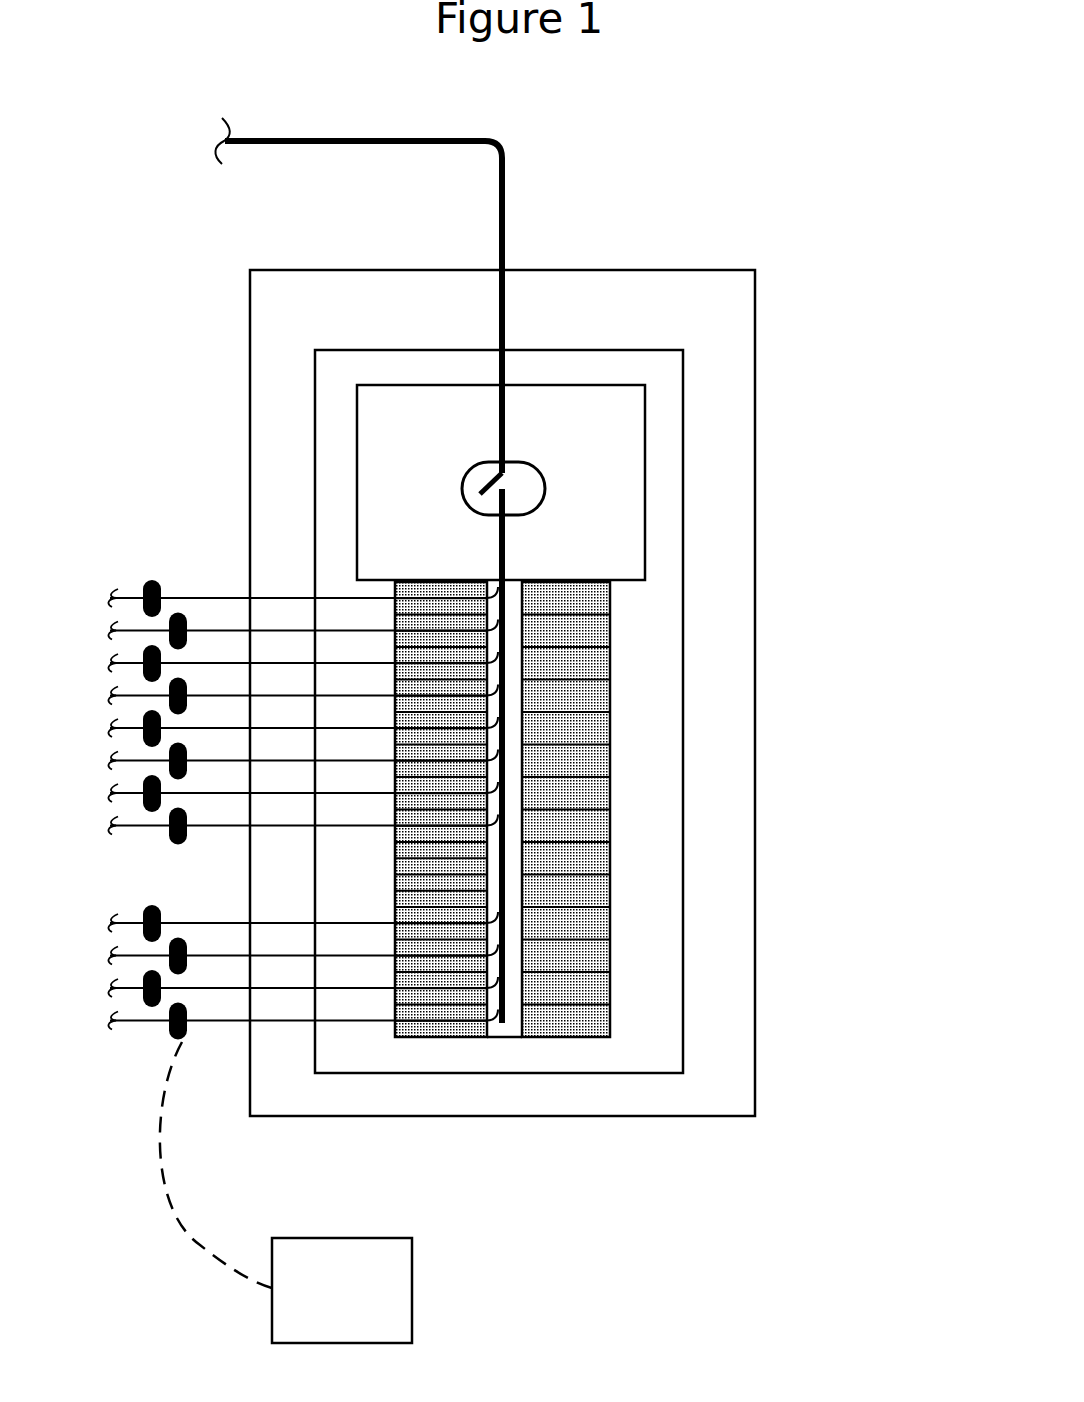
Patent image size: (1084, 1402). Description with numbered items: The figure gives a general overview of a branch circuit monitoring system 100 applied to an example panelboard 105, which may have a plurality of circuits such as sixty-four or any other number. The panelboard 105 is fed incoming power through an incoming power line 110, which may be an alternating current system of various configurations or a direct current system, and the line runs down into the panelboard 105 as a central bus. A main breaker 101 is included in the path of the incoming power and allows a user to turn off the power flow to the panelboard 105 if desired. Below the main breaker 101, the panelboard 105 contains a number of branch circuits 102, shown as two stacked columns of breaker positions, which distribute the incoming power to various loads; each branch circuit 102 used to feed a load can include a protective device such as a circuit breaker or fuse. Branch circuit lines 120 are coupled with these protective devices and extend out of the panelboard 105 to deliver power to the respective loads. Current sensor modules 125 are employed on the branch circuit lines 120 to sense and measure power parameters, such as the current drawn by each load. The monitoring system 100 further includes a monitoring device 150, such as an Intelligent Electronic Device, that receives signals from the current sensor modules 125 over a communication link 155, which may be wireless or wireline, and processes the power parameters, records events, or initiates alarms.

The branch circuit monitoring system 100 is at (681, 127).
The main breaker 101 is at (617, 472).
The branch circuits 102 is at (587, 597).
The panelboard 105 is at (722, 270).
The incoming power line 110 is at (328, 139).
The branch circuit lines 120 is at (215, 596).
The current sensor modules 125 is at (148, 584).
The monitoring device 150 is at (345, 1235).
The communication link 155 is at (187, 1203).